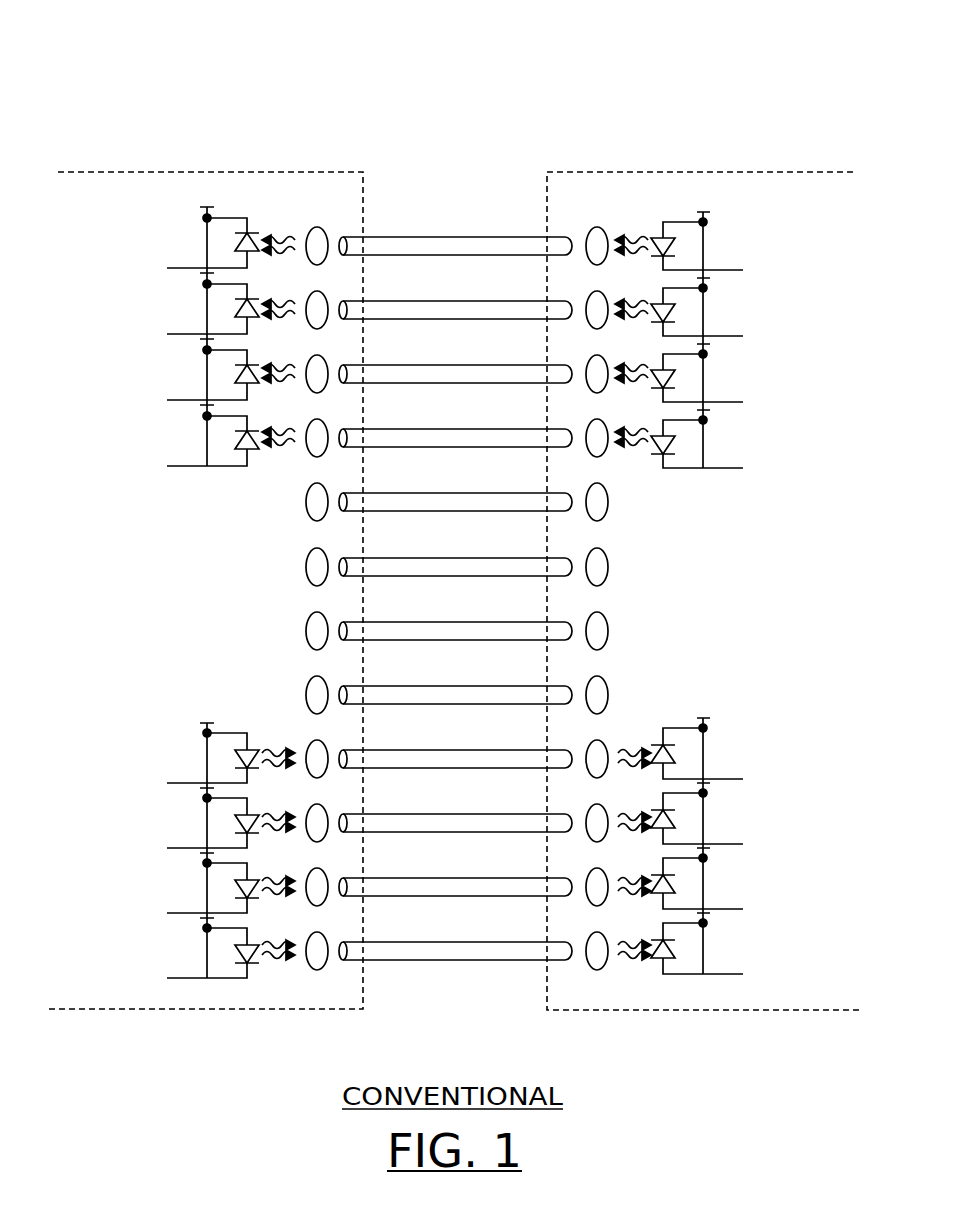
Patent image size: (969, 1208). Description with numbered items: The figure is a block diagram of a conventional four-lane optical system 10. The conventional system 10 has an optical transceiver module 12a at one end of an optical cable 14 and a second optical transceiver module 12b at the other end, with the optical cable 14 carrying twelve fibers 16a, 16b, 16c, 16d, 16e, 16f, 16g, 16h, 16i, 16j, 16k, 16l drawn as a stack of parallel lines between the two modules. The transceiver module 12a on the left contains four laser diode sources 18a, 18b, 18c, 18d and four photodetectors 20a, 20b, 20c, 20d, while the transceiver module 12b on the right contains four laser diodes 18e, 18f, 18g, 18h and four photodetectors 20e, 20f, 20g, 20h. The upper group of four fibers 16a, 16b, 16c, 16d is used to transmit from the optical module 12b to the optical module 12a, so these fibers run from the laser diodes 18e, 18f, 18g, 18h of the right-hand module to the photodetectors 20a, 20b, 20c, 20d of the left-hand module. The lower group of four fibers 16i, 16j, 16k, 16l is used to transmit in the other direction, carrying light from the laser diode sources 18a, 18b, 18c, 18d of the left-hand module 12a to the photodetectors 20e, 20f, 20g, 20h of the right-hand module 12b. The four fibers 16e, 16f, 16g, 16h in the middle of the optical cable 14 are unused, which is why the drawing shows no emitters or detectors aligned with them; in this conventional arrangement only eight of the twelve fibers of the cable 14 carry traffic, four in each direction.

The conventional four-lane optical system 10 is at (308, 38).
The optical transceiver module 12a is at (207, 601).
The optical transceiver module 12b is at (764, 602).
The optical cable 14 is at (533, 123).
The fiber 16a is at (469, 237).
The fiber 16b is at (469, 301).
The fiber 16c is at (469, 365).
The fiber 16d is at (469, 429).
The fiber 16e is at (469, 493).
The fiber 16f is at (469, 558).
The fiber 16g is at (469, 622).
The fiber 16h is at (469, 686).
The fiber 16i is at (469, 750).
The fiber 16j is at (469, 814).
The fiber 16k is at (469, 878).
The fiber 16l is at (469, 942).
The laser diode source 18a is at (251, 747).
The laser diode source 18b is at (251, 812).
The laser diode source 18c is at (251, 877).
The laser diode source 18d is at (251, 942).
The laser diode 18e is at (658, 236).
The laser diode 18f is at (658, 302).
The laser diode 18g is at (658, 368).
The laser diode 18h is at (658, 434).
The photodetector 20a is at (251, 233).
The photodetector 20b is at (251, 299).
The photodetector 20c is at (251, 365).
The photodetector 20d is at (251, 431).
The photodetector 20e is at (658, 743).
The photodetector 20f is at (658, 808).
The photodetector 20g is at (658, 873).
The photodetector 20h is at (658, 938).